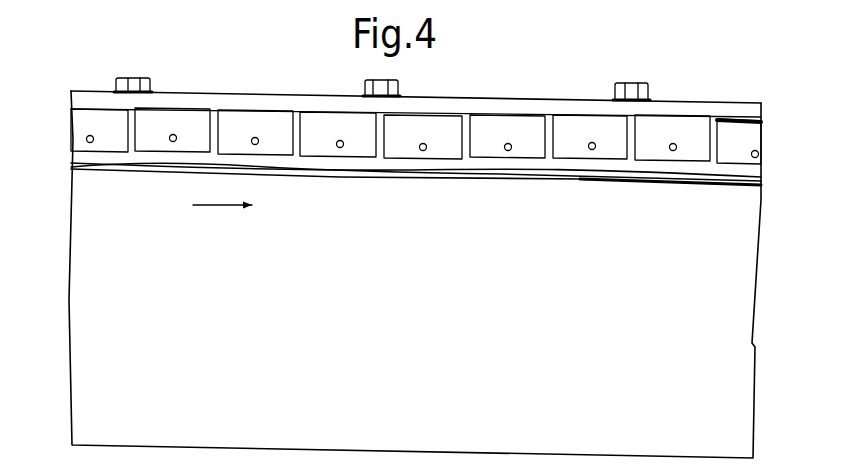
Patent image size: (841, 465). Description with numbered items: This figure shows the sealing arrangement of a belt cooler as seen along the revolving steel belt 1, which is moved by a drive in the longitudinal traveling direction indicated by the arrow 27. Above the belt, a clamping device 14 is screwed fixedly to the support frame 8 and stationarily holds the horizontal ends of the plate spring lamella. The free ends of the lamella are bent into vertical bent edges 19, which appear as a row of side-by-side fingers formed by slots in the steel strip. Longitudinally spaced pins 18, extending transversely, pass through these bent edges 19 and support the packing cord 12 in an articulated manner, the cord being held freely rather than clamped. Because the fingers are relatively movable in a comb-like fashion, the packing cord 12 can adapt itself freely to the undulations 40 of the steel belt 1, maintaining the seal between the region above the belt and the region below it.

The steel belt 1 is at (647, 173).
The support frame 8 is at (183, 345).
The packing cord 12 is at (380, 163).
The clamping device 14 is at (264, 101).
The pins 18 is at (337, 148).
The bent edge 19 is at (520, 130).
The direction of the arrow 27 is at (205, 206).
The undulations 40 is at (182, 165).